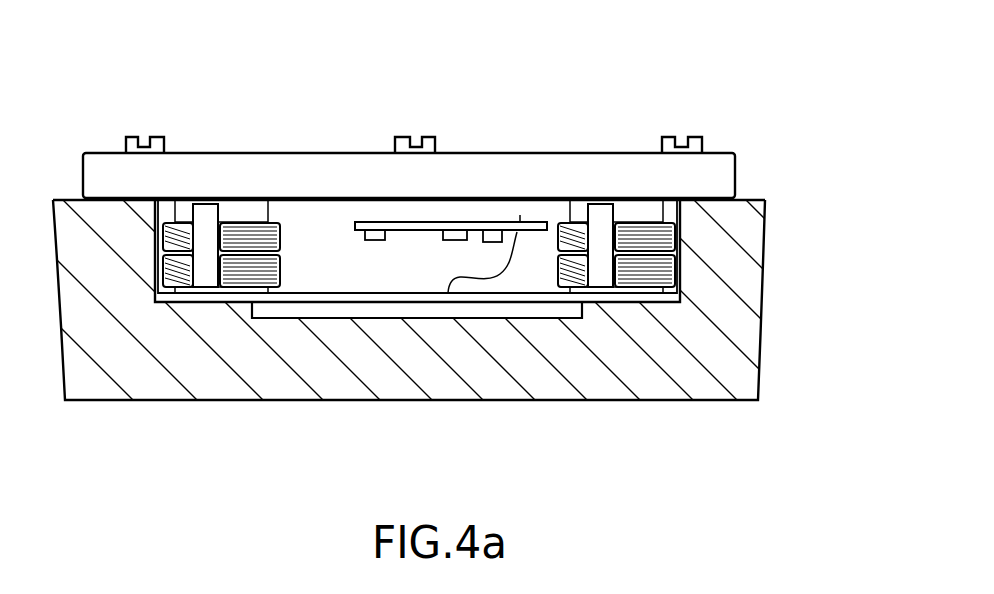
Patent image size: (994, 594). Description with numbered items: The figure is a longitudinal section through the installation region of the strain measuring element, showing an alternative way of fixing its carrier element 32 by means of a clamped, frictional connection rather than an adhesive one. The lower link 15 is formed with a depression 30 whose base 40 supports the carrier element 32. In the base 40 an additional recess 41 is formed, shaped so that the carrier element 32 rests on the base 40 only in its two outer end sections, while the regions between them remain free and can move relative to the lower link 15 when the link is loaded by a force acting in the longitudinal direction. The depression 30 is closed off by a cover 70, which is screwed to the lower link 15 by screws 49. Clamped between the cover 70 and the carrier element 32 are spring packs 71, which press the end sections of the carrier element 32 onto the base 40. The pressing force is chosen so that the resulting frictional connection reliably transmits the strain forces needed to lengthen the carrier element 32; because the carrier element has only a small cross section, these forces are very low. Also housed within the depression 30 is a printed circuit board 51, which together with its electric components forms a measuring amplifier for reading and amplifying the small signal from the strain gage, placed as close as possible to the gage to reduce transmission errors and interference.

The lower link 15 is at (733, 250).
The depression 30 is at (697, 197).
The carrier element 32 is at (345, 293).
The base of the depression 40 is at (207, 303).
The additional recess 41 is at (280, 312).
The screws 49 is at (125, 138).
The printed circuit board 51 is at (403, 233).
The cover 70 is at (303, 153).
The spring packs 71 is at (283, 238).